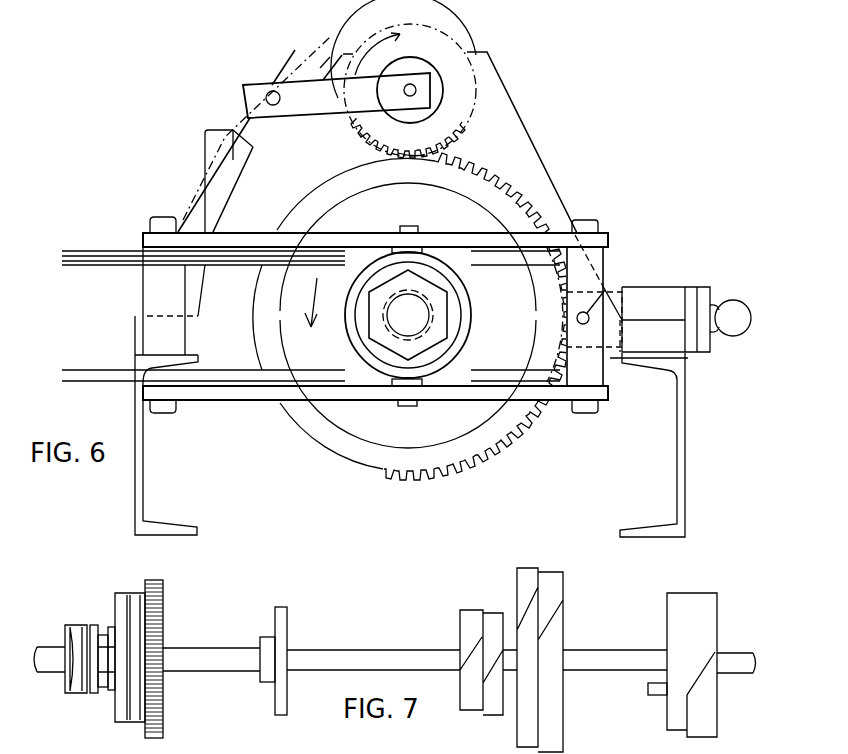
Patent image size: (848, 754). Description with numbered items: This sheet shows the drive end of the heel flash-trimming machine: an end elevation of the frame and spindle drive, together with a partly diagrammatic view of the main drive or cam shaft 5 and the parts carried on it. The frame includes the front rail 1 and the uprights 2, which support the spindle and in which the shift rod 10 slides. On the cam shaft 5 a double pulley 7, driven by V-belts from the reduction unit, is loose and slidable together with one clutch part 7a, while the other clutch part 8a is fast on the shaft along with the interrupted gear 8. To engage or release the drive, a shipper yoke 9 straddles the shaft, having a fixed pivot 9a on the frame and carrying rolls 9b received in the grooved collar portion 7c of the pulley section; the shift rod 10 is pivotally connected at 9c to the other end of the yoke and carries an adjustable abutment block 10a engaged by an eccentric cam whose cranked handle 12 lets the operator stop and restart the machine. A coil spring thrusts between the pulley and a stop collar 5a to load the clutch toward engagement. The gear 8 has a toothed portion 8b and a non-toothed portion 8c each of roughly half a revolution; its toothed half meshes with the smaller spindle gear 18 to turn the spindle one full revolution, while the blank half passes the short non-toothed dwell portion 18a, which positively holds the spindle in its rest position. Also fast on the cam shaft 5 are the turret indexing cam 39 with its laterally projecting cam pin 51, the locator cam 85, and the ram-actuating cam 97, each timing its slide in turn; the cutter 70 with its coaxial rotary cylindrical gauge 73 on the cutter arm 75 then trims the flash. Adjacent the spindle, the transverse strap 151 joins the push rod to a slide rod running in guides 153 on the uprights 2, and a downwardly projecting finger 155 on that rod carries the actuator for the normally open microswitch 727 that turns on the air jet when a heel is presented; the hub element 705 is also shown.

In FIG. 6, the front rail 1 is at (140, 496).
In FIG. 6, the uprights 2 is at (520, 150).
In FIG. 6, the cam shaft 5 is at (415, 315).
In FIG. 7, the cam shaft 5 is at (365, 648).
In FIG. 6, the stop collar 5a is at (445, 333).
In FIG. 7, the double pulley 7 is at (73, 693).
In FIG. 6, the clutch part 7a is at (350, 440).
In FIG. 7, the grooved collar portion 7c is at (102, 690).
In FIG. 7, the interrupted gear 8 is at (173, 609).
In FIG. 7, the clutch part 8a is at (120, 722).
In FIG. 6, the toothed portion 8b is at (508, 446).
In FIG. 6, the non-toothed portion 8c is at (256, 298).
In FIG. 6, the shipper yoke 9 is at (249, 233).
In FIG. 6, the fixed pivot 9a is at (162, 216).
In FIG. 6, the rolls 9b is at (425, 246).
In FIG. 6, the pivotal connection 9c is at (590, 222).
In FIG. 6, the shift rod 10 is at (605, 290).
In FIG. 6, the adjustable abutment block 10a is at (628, 288).
In FIG. 6, the cranked handle 12 is at (728, 336).
In FIG. 6, the spindle gear 18 is at (452, 43).
In FIG. 6, the non-toothed dwell portion 18a is at (402, 154).
In FIG. 7, the turret indexing cam 39 is at (733, 614).
In FIG. 7, the cam pin 51 is at (655, 697).
In FIG. 7, the cutter 70 is at (170, 750).
In FIG. 7, the rotary cylindrical gauge 73 is at (178, 749).
In FIG. 7, the cutter arm 75 is at (250, 753).
In FIG. 7, the locator cam 85 is at (456, 620).
In FIG. 7, the ram-actuating cam 97 is at (580, 634).
In FIG. 6, the transverse strap 151 is at (320, 108).
In FIG. 6, the guides 153 is at (305, 62).
In FIG. 6, the finger 155 is at (193, 183).
In FIG. 7, the disk 705 is at (300, 617).
In FIG. 6, the microswitch 727 is at (207, 136).